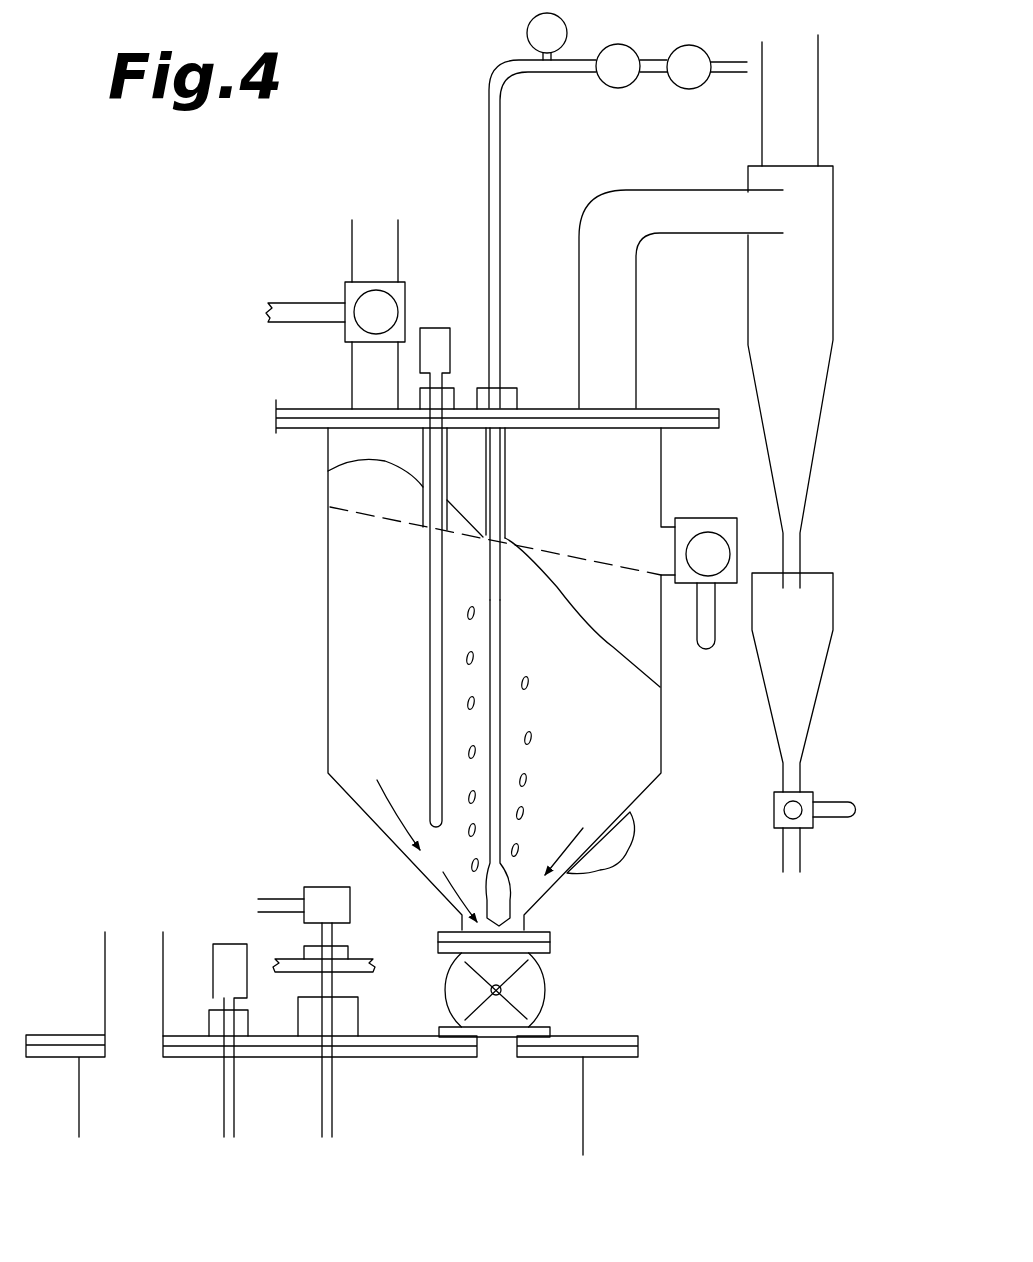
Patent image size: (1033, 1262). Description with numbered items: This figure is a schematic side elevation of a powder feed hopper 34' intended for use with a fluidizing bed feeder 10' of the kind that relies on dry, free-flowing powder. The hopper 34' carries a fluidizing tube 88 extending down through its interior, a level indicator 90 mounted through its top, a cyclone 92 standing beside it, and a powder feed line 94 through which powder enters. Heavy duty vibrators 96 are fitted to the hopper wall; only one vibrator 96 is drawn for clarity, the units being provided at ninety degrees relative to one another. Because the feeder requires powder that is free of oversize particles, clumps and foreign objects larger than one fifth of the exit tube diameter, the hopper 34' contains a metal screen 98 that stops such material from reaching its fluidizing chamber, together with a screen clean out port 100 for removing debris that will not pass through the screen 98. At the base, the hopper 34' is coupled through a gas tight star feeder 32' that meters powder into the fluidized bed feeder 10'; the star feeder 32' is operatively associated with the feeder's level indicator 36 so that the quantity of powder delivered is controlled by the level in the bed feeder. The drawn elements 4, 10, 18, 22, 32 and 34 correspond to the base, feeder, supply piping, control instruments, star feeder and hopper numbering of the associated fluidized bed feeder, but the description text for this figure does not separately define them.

The agitator shaft 4 is at (332, 1098).
The fluidizing bed feeder 10' is at (337, 1043).
The base frame 10 is at (337, 1043).
The gas supply pipe 18 is at (487, 132).
The pressure and flow control instruments 22 is at (573, 53).
The gas tight star feeder 32' is at (521, 984).
The rotary valve 32 is at (521, 984).
The powder feed hopper 34' is at (464, 679).
The hopper 34 is at (464, 679).
The level probe 36 is at (212, 965).
The fluidizing tube 88 is at (500, 720).
The level indicator 90 is at (456, 344).
The cyclone 92 is at (833, 212).
The powder feed line 94 is at (376, 236).
The heavy duty vibrators 96 is at (630, 832).
The metal screen 98 is at (363, 517).
The screen clean out port 100 is at (695, 517).